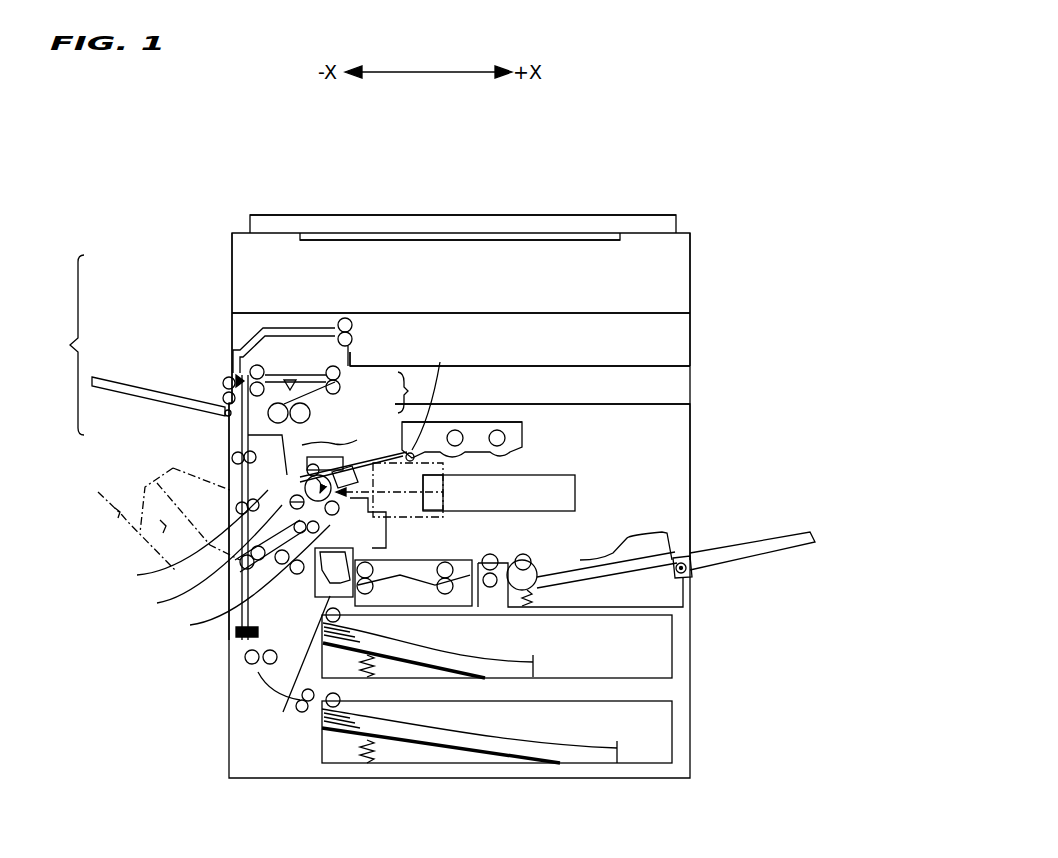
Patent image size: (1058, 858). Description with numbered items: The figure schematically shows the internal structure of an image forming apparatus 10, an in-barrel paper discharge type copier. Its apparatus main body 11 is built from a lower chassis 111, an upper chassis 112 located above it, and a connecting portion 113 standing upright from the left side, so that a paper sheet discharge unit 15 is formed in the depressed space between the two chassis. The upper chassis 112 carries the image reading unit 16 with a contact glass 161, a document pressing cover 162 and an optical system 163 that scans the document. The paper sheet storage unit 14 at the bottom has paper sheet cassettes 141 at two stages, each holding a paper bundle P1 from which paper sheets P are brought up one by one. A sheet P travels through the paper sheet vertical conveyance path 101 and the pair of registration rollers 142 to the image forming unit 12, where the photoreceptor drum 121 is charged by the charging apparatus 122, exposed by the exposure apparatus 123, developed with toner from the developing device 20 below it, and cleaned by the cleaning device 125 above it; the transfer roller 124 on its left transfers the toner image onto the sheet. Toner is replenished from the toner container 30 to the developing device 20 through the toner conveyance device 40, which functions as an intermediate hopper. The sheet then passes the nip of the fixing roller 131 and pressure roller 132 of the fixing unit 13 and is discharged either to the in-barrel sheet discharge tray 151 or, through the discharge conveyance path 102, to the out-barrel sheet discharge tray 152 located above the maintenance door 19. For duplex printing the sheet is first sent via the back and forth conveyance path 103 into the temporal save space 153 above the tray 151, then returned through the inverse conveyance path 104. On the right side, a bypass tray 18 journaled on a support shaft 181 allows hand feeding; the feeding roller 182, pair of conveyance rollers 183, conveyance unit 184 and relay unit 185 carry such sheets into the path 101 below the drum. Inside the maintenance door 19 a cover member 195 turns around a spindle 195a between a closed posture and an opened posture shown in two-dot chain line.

The image forming apparatus 10 is at (607, 193).
The apparatus main body 11 is at (64, 345).
The image forming unit 12 is at (585, 466).
The fixing unit 13 is at (415, 392).
The paper sheet storage unit 14 is at (558, 685).
The paper sheet discharge unit 15 is at (708, 365).
The image reading unit 16 is at (708, 285).
The bypass tray 18 is at (770, 540).
The maintenance door 19 is at (223, 490).
The developing device 20 is at (380, 540).
The toner container 30 is at (557, 418).
The toner conveyance device 40 is at (413, 503).
The paper sheet vertical conveyance path 101 is at (212, 645).
The discharge conveyance path 102 is at (310, 385).
The back and forth conveyance path 103 is at (298, 330).
The inverse conveyance path 104 is at (230, 472).
The lower chassis 111 is at (225, 443).
The upper chassis 112 is at (225, 290).
The connecting portion 113 is at (225, 332).
The photoreceptor drum 121 is at (414, 455).
The charging apparatus 122 is at (370, 487).
The exposure apparatus 123 is at (545, 480).
The transfer roller 124 is at (160, 602).
The cleaning device 125 is at (403, 418).
The fixing roller 131 is at (310, 413).
The pressure roller 132 is at (341, 385).
The paper sheet cassette 141 is at (660, 648).
The pair of registration rollers 142 is at (330, 528).
The in-barrel sheet discharge tray 151 is at (478, 420).
The out-barrel sheet discharge tray 152 is at (170, 400).
The temporal save space 153 is at (515, 356).
The contact glass 161 is at (433, 240).
The document pressing cover 162 is at (352, 222).
The optical system 163 is at (515, 286).
The support shaft 181 is at (684, 575).
The feeding roller 182 is at (533, 568).
The pair of conveyance rollers 183 is at (492, 560).
The conveyance unit 184 is at (413, 600).
The relay unit 185 is at (294, 670).
The cover member 195 is at (140, 578).
The spindle 195a is at (192, 625).
The paper sheet P is at (630, 537).
The paper bundle P1 is at (572, 624).